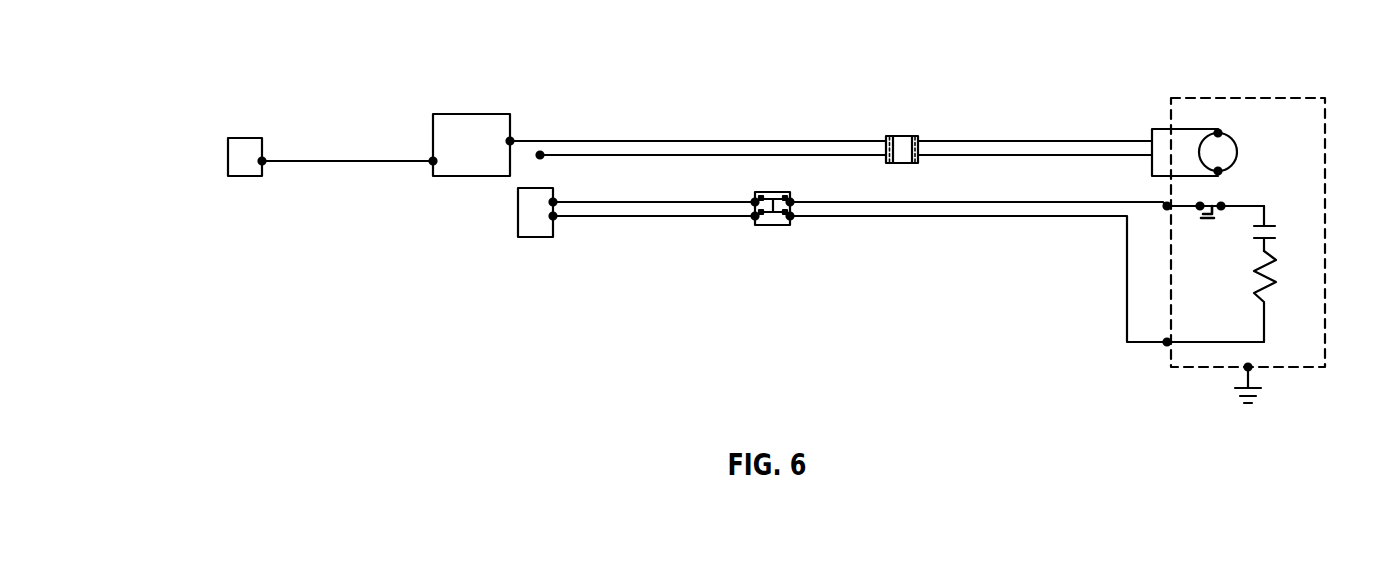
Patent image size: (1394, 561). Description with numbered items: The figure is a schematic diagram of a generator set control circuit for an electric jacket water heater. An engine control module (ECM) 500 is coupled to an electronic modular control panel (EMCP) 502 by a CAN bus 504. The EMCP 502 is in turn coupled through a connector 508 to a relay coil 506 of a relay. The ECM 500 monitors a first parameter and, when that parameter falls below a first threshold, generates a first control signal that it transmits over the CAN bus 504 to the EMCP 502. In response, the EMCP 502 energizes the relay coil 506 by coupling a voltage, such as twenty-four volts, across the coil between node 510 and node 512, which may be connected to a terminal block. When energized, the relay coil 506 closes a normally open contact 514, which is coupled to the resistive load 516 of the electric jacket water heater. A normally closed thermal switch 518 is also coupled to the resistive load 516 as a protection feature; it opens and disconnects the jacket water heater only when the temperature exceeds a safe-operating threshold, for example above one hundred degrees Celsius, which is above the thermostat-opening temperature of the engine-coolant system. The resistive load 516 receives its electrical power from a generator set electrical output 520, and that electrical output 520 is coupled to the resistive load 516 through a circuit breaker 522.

The engine control module 500 is at (228, 152).
The electronic modular control panel 502 is at (472, 112).
The CAN bus 504 is at (323, 160).
The relay coil 506 is at (1224, 134).
The connector 508 is at (905, 135).
The node 510 is at (513, 141).
The node 512 is at (540, 150).
The normally open contact 514 is at (1268, 242).
The resistive load 516 is at (1268, 277).
The thermal switch 518 is at (1208, 222).
The generator set electrical output 520 is at (518, 207).
The circuit breaker 522 is at (772, 226).